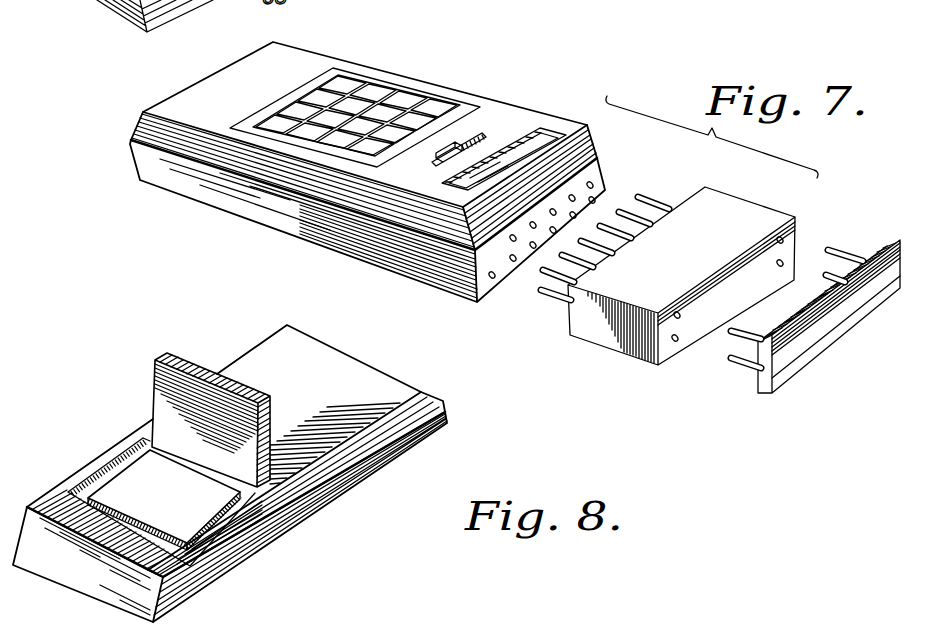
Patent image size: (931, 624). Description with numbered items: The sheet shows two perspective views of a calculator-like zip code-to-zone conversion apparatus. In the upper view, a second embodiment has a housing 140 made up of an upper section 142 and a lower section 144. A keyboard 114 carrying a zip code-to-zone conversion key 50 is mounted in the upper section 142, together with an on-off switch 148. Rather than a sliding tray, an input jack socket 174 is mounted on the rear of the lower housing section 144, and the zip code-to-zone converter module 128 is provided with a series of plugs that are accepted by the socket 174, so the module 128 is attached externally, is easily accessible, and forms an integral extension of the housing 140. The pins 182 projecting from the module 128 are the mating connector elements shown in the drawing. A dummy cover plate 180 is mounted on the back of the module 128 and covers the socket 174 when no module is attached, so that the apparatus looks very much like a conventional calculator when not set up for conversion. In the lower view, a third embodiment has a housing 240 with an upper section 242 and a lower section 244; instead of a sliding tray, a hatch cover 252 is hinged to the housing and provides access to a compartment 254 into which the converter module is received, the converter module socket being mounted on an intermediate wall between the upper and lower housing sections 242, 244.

In FIG. 7, the housing 140 is at (500, 60).
In FIG. 7, the zip code-to-zone conversion key 50 is at (320, 104).
In FIG. 7, the keyboard 114 is at (385, 90).
In FIG. 7, the upper section 142 is at (491, 103).
In FIG. 7, the zip code-to-zone converter module 128 is at (548, 126).
In FIG. 7, the lower section 144 is at (255, 212).
In FIG. 7, the on-off switch 148 is at (432, 160).
In FIG. 7, the input jack socket 174 is at (515, 261).
In FIG. 7, the connector pins 182 is at (622, 206).
In FIG. 7, the dummy cover plate 180 is at (797, 352).
In FIG. 8, the housing 240 is at (108, 378).
In FIG. 8, the hatch cover 252 is at (182, 360).
In FIG. 8, the compartment 254 is at (123, 475).
In FIG. 8, the lower section 244 is at (428, 400).
In FIG. 8, the upper section 242 is at (297, 540).